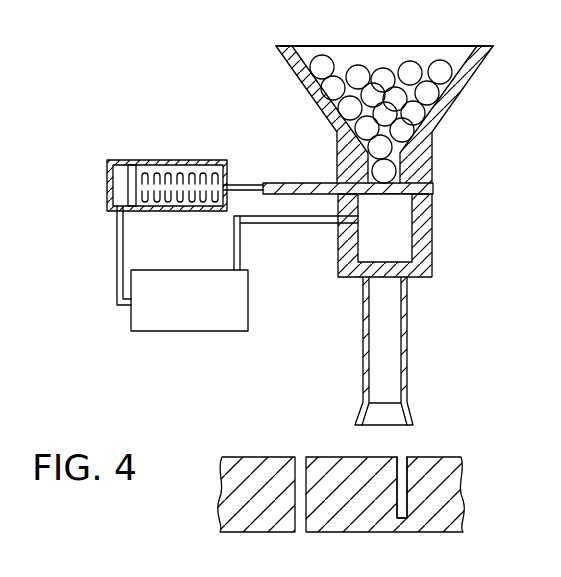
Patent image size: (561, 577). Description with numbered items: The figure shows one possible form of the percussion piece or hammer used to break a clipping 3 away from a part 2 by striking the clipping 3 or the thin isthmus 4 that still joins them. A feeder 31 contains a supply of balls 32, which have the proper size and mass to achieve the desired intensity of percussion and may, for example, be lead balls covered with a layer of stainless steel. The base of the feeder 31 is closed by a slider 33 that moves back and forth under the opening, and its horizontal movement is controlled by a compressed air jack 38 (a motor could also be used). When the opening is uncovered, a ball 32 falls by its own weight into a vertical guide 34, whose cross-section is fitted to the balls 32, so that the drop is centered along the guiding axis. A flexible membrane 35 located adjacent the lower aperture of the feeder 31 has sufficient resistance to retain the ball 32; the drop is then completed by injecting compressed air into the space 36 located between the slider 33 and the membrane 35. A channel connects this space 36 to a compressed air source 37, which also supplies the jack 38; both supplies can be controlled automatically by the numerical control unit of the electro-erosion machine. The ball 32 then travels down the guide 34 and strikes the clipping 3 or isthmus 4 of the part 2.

The part 2 is at (245, 518).
The clipping 3 is at (342, 513).
The isthmus 4 is at (403, 527).
The feeder 31 is at (417, 147).
The balls 32 is at (350, 168).
The slider 33 is at (433, 188).
The vertical guide 34 is at (407, 340).
The flexible membrane 35 is at (412, 254).
The space 36 is at (400, 214).
The compressed air source 37 is at (172, 317).
The compressed air jack 38 is at (120, 172).